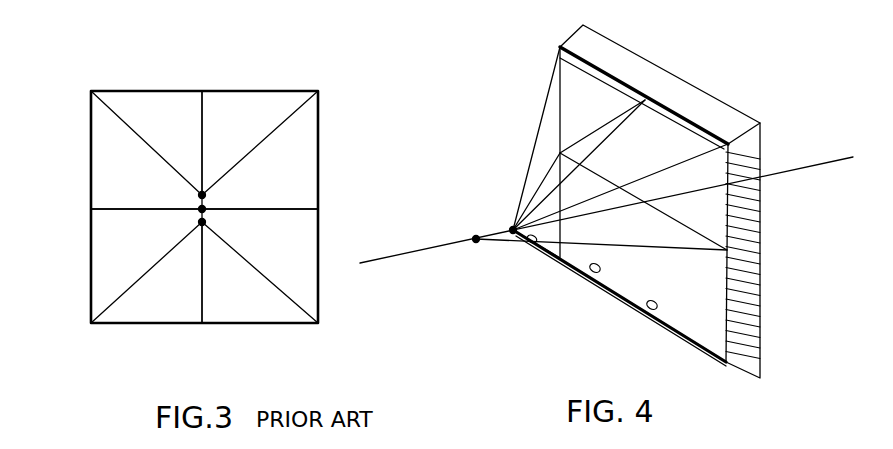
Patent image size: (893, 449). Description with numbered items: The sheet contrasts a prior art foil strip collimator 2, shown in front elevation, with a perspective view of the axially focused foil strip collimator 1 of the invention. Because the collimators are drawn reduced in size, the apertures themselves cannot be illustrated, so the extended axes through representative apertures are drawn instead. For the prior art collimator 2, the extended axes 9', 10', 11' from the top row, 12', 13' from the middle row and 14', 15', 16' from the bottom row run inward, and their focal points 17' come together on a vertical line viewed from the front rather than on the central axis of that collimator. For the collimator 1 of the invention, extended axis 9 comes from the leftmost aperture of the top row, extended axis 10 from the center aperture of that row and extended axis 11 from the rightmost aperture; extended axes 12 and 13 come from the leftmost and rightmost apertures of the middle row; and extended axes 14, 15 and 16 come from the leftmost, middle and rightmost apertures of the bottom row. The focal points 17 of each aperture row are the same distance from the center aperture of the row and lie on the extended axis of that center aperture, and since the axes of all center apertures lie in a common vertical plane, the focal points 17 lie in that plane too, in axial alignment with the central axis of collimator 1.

In FIG. 4, the axially focused foil strip collimator 1 is at (740, 110).
In FIG. 3, the prior art foil strip collimator 2 is at (293, 90).
In FIG. 4, the extended axis 9 is at (517, 138).
In FIG. 4, the extended axis 10 is at (598, 122).
In FIG. 4, the extended axis 11 is at (635, 138).
In FIG. 4, the extended axis 12 is at (504, 184).
In FIG. 4, the extended axis 13 is at (601, 271).
In FIG. 4, the extended axis 14 is at (519, 260).
In FIG. 4, the extended axis 15 is at (574, 293).
In FIG. 4, the extended axis 16 is at (636, 331).
In FIG. 4, the focal points 17 is at (468, 217).
In FIG. 3, the extended axis 9' is at (146, 119).
In FIG. 3, the extended axis 10' is at (220, 112).
In FIG. 3, the extended axis 11' is at (260, 111).
In FIG. 3, the extended axis 12' is at (111, 189).
In FIG. 3, the extended axis 13' is at (294, 183).
In FIG. 3, the extended axis 14' is at (108, 272).
In FIG. 3, the extended axis 15' is at (166, 299).
In FIG. 3, the extended axis 16' is at (260, 299).
In FIG. 3, the focal points 17' is at (158, 214).